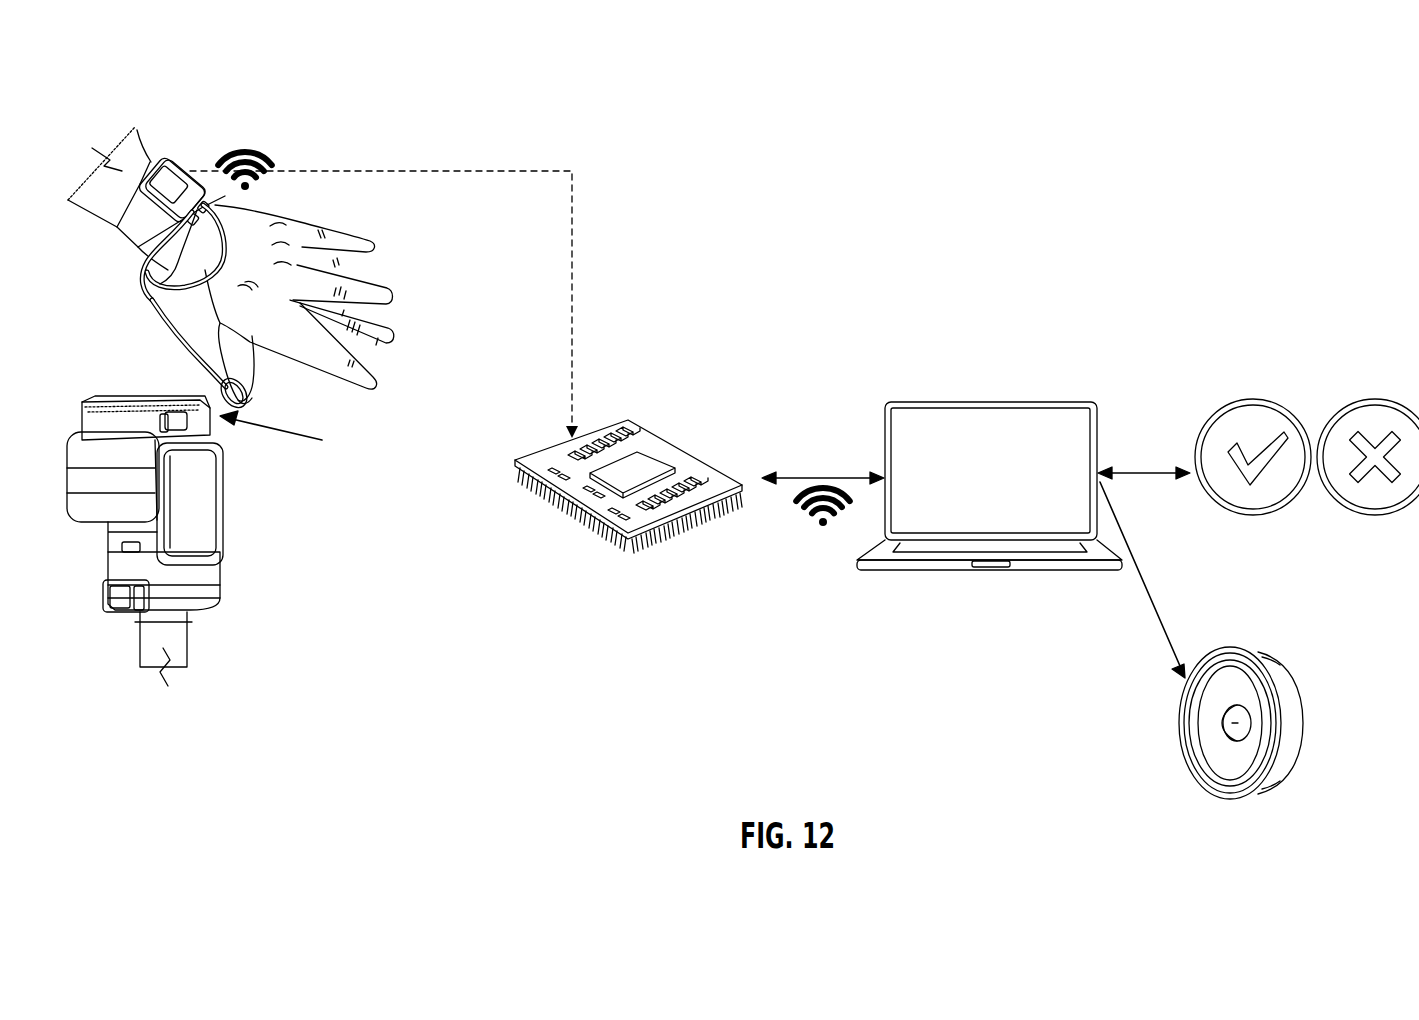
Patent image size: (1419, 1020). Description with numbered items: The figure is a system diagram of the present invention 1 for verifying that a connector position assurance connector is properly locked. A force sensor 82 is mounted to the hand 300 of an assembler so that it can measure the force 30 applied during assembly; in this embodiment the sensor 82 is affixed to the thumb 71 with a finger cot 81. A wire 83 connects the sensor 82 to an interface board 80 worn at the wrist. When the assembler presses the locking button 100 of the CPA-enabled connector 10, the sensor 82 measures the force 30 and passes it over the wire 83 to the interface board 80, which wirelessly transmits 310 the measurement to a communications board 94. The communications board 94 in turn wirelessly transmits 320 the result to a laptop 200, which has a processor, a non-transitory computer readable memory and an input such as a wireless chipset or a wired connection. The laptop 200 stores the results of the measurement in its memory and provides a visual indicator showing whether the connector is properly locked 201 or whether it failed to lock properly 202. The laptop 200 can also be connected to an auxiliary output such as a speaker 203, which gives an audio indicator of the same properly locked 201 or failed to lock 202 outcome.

The present invention 1 is at (745, 190).
The CPA-enabled connector 10 is at (257, 578).
The force 30 is at (292, 436).
The thumb 71 is at (244, 400).
The interface board 80 is at (182, 172).
The finger cot 81 is at (207, 353).
The force sensor 82 is at (243, 376).
The wire 83 is at (158, 308).
The communications board 94 is at (650, 434).
The locking button 100 is at (186, 423).
The laptop 200 is at (1033, 428).
The properly locked indicator 201 is at (1257, 422).
The failed to lock indicator 202 is at (1381, 422).
The speaker 203 is at (1267, 725).
The hand 300 is at (257, 230).
The wireless transmission 310 is at (253, 150).
The wireless transmission 320 is at (808, 508).